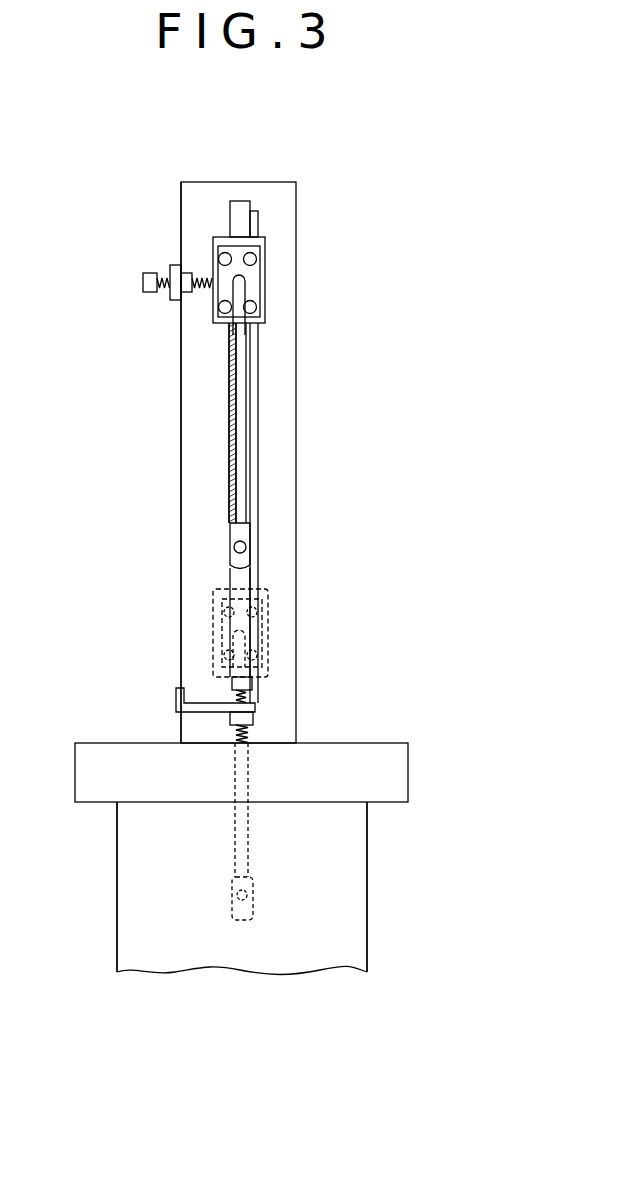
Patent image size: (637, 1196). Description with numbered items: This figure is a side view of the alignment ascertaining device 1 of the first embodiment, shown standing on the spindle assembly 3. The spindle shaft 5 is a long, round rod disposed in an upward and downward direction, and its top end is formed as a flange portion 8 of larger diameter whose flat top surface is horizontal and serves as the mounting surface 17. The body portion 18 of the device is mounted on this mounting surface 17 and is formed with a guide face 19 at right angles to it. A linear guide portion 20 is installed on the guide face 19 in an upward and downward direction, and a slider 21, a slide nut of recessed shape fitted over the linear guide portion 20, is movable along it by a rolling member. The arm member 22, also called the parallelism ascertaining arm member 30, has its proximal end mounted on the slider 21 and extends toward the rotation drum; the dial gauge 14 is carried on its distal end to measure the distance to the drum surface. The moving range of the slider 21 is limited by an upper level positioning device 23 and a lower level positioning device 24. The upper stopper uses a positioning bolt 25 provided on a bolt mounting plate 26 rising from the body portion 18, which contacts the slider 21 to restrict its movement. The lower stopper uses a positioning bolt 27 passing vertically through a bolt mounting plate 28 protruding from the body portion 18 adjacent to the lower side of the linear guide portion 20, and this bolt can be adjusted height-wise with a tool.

The alignment ascertaining device 1 is at (370, 196).
The spindle assembly 3 is at (242, 887).
The spindle shaft 5 is at (350, 902).
The flange portion 8 is at (392, 773).
The dial gauge 14 is at (243, 562).
The mounting surface 17 is at (103, 740).
The body portion 18 is at (272, 188).
The guide face 19 is at (203, 425).
The linear guide portion 20 is at (250, 395).
The slider 21 is at (258, 241).
The arm member 22 is at (232, 423).
The upper level positioning device 23 is at (155, 209).
The lower level positioning device 24 is at (364, 655).
The positioning bolt 25 is at (141, 280).
The bolt mounting plate 26 is at (171, 265).
The positioning bolt 27 is at (252, 681).
The bolt mounting plate 28 is at (252, 710).
The parallelism ascertaining arm member 30 is at (238, 480).